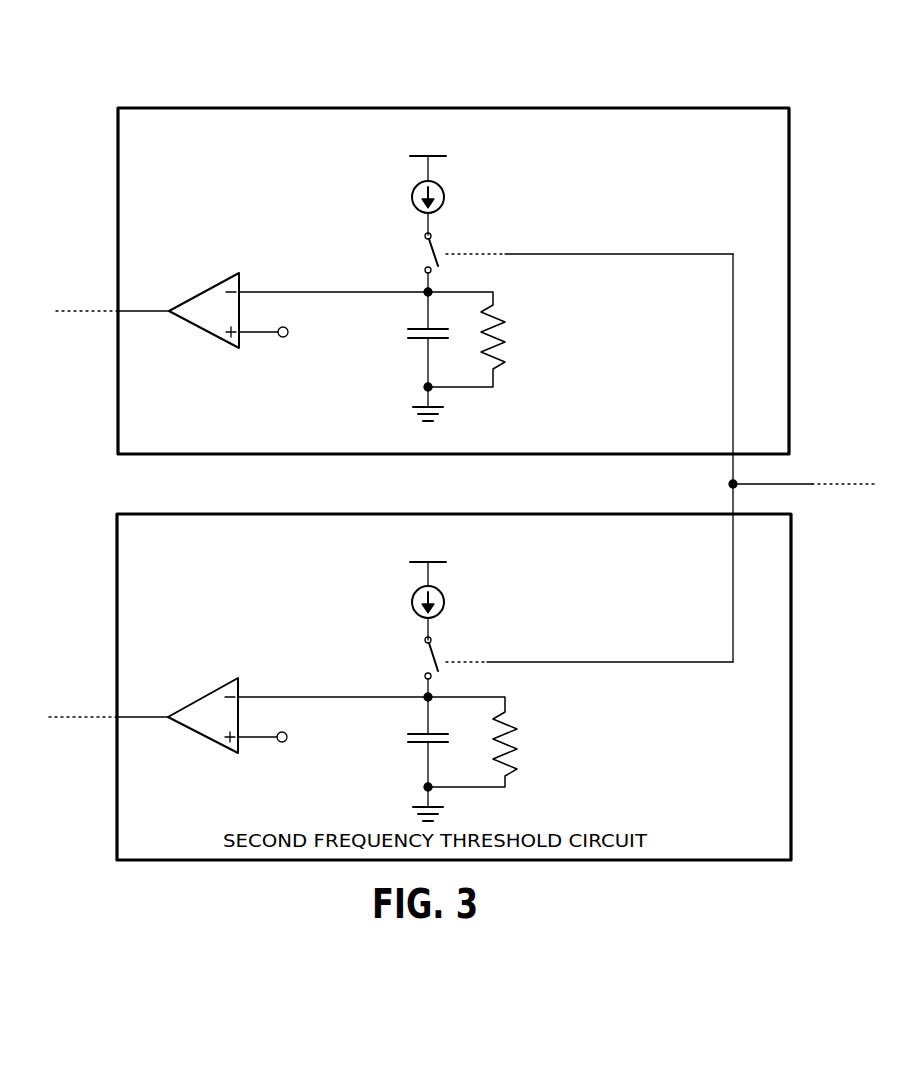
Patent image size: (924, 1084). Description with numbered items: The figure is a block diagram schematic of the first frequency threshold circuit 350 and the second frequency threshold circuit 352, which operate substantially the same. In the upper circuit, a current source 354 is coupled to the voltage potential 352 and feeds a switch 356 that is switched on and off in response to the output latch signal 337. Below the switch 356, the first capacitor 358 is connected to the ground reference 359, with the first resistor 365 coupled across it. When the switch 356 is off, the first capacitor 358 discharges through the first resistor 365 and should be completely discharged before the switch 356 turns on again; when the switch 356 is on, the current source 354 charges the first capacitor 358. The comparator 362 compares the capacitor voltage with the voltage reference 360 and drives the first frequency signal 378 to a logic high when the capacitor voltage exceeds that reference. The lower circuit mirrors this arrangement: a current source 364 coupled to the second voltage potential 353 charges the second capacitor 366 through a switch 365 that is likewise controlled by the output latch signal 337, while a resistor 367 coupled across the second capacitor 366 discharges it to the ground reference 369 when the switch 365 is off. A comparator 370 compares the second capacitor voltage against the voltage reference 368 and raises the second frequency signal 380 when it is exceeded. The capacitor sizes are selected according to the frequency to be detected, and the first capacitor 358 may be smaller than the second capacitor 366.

The output latch signal UL 337 is at (866, 465).
The first frequency threshold circuit 350 is at (568, 107).
The second frequency threshold circuit / voltage potential VP 352 is at (447, 147).
The second voltage potential VP2 353 is at (455, 552).
The current source 354 is at (410, 194).
The switch 356 is at (422, 262).
The first capacitor CP1 358 is at (410, 339).
The ground reference 359 is at (447, 414).
The voltage reference VREF 360 is at (312, 352).
The comparator 362 is at (204, 285).
The current source 364 is at (410, 599).
The first resistor R1 / switch 365 is at (541, 337).
The second capacitor CP2 366 is at (412, 749).
The resistor 367 is at (553, 742).
The voltage reference VREF 368 is at (312, 752).
The ground reference 369 is at (450, 813).
The comparator 370 is at (218, 688).
The first frequency signal UF1 378 is at (78, 285).
The second frequency signal UF2 380 is at (72, 685).